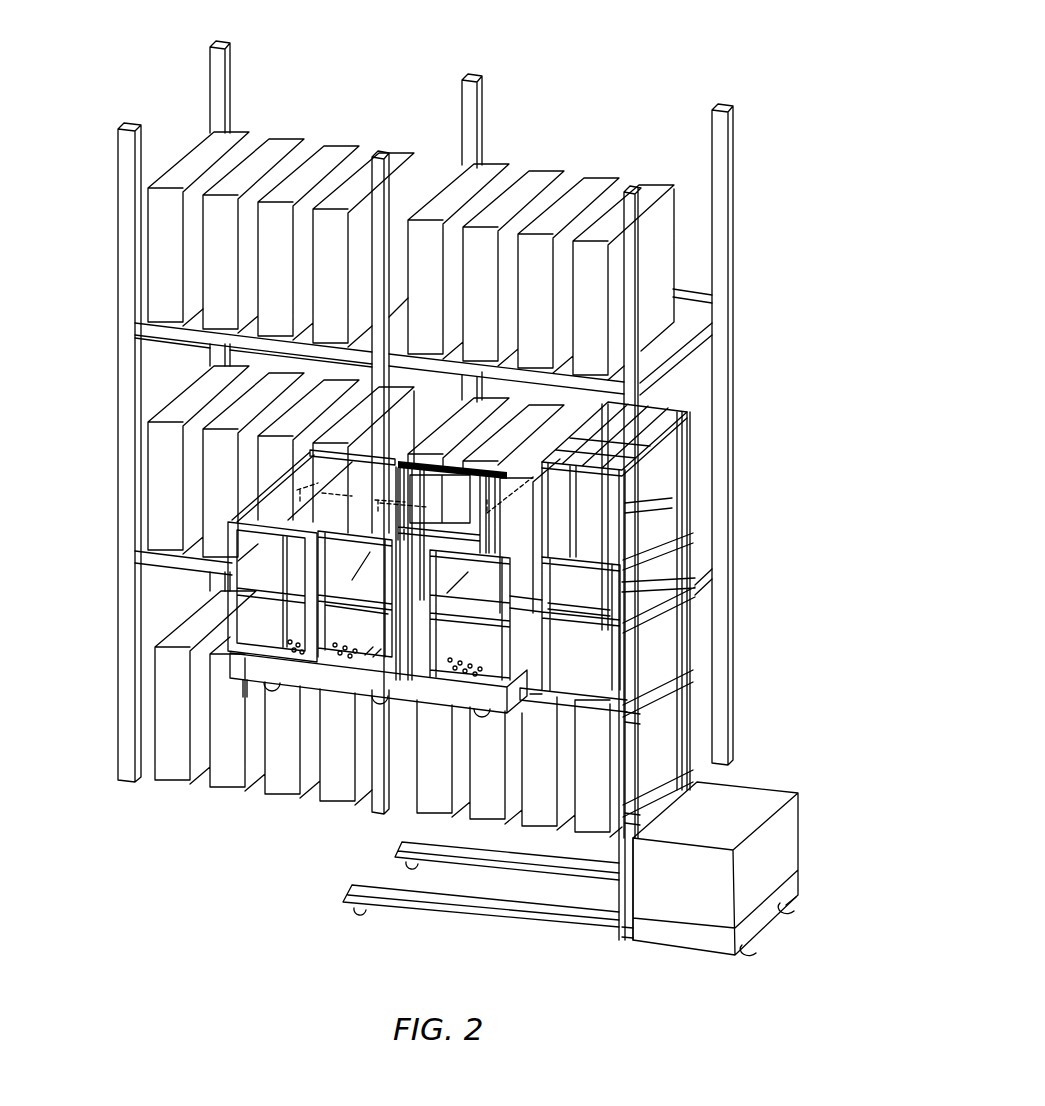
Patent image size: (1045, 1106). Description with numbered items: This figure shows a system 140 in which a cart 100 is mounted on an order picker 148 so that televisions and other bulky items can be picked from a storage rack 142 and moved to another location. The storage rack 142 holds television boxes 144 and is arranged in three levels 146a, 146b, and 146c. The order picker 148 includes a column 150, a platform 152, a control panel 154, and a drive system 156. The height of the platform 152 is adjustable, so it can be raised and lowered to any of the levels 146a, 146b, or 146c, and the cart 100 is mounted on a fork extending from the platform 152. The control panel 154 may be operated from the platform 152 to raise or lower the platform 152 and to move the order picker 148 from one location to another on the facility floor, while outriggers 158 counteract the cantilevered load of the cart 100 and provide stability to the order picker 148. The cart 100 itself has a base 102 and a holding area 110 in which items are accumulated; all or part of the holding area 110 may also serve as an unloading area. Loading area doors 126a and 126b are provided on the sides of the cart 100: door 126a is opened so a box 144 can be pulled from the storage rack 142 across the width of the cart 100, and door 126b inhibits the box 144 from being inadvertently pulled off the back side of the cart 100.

The cart 100 is at (298, 682).
The base 102 is at (345, 692).
The holding area 110 is at (225, 596).
The loading area door 126a is at (440, 464).
The loading area door 126b is at (455, 624).
The system 140 is at (652, 76).
The storage rack 142 is at (120, 328).
The television boxes 144 is at (200, 150).
The level 146a is at (116, 666).
The level 146b is at (116, 436).
The level 146c is at (116, 231).
The order picker 148 is at (681, 940).
The column 150 is at (690, 717).
The platform 152 is at (600, 671).
The control panel 154 is at (663, 543).
The drive system 156 is at (730, 826).
The outriggers 158 is at (437, 914).